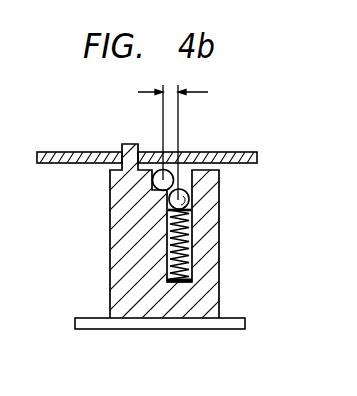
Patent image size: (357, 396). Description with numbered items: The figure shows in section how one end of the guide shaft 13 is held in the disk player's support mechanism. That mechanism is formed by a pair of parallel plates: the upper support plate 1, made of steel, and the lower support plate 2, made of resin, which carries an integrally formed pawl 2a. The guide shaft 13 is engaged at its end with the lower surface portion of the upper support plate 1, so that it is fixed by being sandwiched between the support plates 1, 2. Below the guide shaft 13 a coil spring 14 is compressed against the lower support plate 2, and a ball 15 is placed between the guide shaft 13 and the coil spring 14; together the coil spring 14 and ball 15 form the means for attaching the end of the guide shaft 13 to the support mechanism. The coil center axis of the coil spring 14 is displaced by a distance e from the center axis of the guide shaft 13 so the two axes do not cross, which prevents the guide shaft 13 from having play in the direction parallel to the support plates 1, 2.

The upper support plate 1 is at (67, 151).
The lower support plate 2 is at (177, 330).
The pawl 2a is at (111, 269).
The guide shaft 13 is at (152, 183).
The coil spring 14 is at (192, 237).
The ball 15 is at (190, 196).
The displacement distance e is at (173, 136).